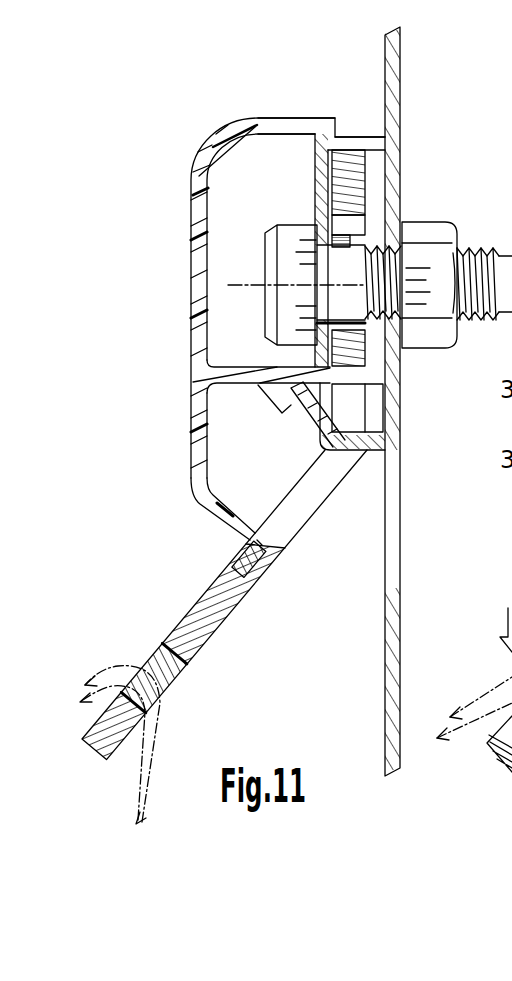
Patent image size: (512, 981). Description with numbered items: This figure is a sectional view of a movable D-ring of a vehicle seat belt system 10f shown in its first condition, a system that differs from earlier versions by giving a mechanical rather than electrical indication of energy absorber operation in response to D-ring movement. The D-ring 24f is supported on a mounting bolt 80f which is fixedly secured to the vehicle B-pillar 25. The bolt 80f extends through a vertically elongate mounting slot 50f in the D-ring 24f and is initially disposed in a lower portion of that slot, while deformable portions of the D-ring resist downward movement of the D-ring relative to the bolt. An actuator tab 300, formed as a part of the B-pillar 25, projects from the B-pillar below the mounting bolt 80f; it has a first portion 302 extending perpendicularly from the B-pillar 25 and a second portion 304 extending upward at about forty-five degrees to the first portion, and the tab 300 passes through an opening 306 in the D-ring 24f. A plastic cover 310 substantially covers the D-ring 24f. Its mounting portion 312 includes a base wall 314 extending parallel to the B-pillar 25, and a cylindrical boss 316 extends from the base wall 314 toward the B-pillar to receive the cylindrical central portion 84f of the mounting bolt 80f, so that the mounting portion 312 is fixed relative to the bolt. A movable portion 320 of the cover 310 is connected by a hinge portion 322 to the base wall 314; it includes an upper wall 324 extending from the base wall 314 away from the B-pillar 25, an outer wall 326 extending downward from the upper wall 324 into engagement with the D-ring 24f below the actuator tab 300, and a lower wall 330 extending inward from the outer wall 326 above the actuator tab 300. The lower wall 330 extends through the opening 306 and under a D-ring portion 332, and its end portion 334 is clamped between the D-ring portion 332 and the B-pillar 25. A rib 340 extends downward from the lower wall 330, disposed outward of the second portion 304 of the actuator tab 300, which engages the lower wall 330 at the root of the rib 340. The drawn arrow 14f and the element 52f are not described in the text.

The vehicle seat belt system 10f is at (182, 103).
The pivoting direction arrow 14f is at (157, 794).
The D-ring 24f is at (224, 586).
The vehicle B-pillar 25 is at (382, 668).
The mounting slot 50f is at (347, 235).
The lower spacer 52f is at (360, 360).
The mounting bolt 80f is at (260, 253).
The cylindrical central portion 84f is at (340, 293).
The actuator tab 300 is at (376, 456).
The first portion 302 is at (357, 445).
The second portion 304 is at (310, 413).
The opening 306 is at (283, 523).
The plastic cover 310 is at (187, 177).
The mounting portion 312 is at (313, 165).
The base wall 314 is at (314, 183).
The cylindrical boss 316 is at (410, 222).
The movable portion 320 is at (187, 407).
The hinge portion 322 is at (330, 136).
The upper wall 324 is at (288, 118).
The outer wall 326 is at (193, 433).
The lower wall 330 is at (240, 367).
The D-ring portion 332 is at (367, 384).
The end portion 334 is at (347, 358).
The rib 340 is at (285, 397).